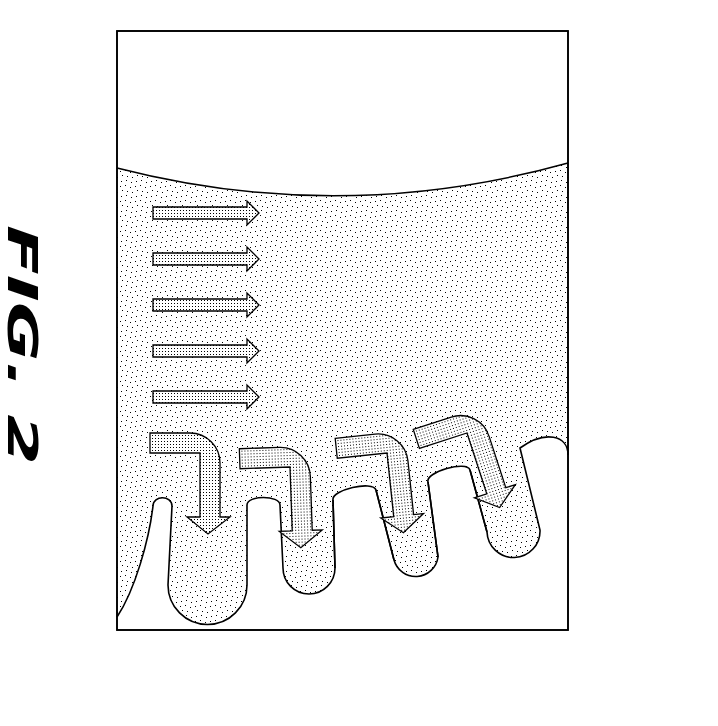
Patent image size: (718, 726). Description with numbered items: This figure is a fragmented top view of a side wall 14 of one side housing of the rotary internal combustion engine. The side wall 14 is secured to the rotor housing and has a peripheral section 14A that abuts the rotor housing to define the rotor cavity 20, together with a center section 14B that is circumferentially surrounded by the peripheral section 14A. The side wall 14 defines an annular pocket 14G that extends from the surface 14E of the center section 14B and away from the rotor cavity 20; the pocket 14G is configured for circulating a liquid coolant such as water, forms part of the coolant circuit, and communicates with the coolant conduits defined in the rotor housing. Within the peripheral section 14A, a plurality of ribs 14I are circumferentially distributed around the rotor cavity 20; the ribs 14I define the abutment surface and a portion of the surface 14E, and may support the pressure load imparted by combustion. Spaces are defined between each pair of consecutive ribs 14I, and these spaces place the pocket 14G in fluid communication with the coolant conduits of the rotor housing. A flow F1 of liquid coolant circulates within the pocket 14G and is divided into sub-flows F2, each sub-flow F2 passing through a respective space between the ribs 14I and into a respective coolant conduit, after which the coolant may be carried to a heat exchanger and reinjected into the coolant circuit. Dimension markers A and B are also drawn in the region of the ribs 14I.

The side wall 14 is at (596, 570).
The peripheral section 14A is at (100, 647).
The center section 14B is at (148, 116).
The surface of the center section 14E is at (182, 146).
The pocket 14G is at (364, 319).
The ribs 14I is at (332, 545).
The rotor cavity 20 is at (316, 75).
The flow F1 is at (170, 258).
The sub-flows F2 is at (165, 445).
The fin width dimension A is at (208, 623).
The channel width dimension B is at (263, 623).